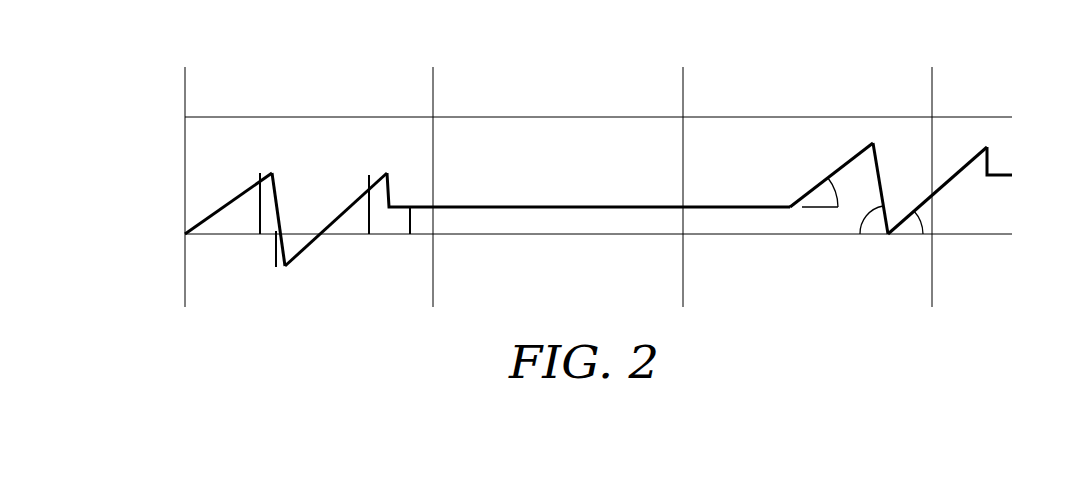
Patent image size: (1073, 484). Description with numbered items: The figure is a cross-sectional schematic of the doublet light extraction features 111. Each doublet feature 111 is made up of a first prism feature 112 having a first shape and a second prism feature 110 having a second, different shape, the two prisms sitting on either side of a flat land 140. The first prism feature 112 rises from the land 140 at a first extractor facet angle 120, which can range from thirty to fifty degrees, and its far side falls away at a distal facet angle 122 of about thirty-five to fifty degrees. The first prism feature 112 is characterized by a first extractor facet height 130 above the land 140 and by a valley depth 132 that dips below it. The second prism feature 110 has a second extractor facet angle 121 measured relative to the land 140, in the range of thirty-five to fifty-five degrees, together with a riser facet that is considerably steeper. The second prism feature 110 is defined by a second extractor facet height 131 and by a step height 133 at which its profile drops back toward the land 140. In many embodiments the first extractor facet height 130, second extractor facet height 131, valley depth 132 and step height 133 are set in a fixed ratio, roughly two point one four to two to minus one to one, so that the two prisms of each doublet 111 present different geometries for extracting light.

The second prism feature 110 is at (990, 145).
The doublet light extraction feature 111 is at (296, 174).
The first prism feature 112 is at (872, 140).
The first extractor facet angle 120 is at (838, 175).
The second extractor facet angle 121 is at (923, 222).
The distal facet angle 122 is at (862, 217).
The first extractor facet height 130 is at (258, 198).
The second extractor facet height 131 is at (367, 212).
The valley depth 132 is at (275, 255).
The step height 133 is at (405, 215).
The land 140 is at (585, 210).